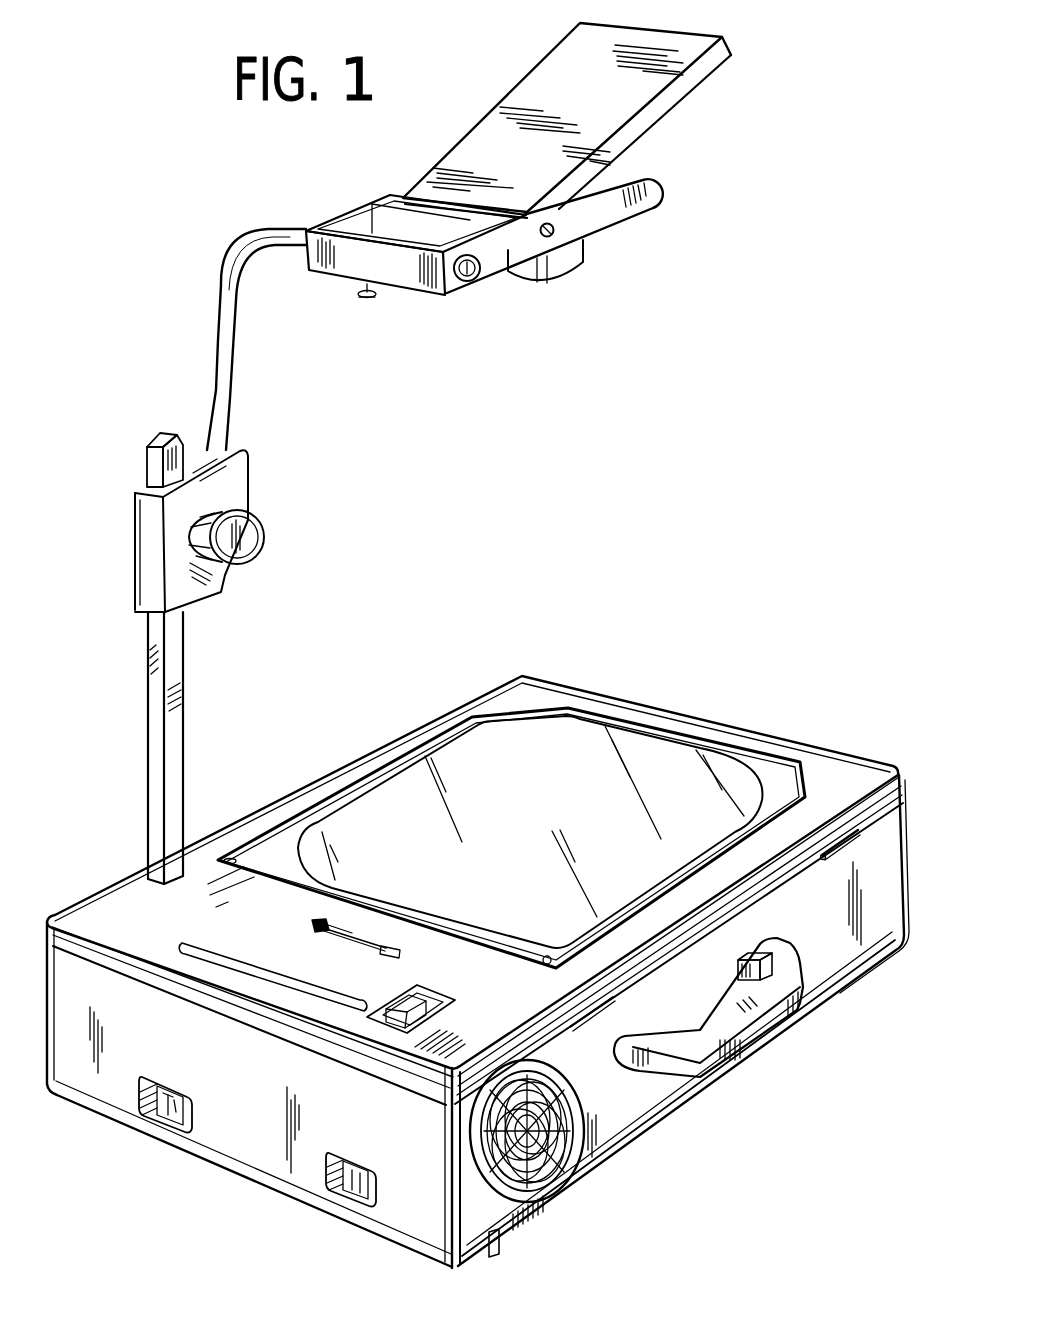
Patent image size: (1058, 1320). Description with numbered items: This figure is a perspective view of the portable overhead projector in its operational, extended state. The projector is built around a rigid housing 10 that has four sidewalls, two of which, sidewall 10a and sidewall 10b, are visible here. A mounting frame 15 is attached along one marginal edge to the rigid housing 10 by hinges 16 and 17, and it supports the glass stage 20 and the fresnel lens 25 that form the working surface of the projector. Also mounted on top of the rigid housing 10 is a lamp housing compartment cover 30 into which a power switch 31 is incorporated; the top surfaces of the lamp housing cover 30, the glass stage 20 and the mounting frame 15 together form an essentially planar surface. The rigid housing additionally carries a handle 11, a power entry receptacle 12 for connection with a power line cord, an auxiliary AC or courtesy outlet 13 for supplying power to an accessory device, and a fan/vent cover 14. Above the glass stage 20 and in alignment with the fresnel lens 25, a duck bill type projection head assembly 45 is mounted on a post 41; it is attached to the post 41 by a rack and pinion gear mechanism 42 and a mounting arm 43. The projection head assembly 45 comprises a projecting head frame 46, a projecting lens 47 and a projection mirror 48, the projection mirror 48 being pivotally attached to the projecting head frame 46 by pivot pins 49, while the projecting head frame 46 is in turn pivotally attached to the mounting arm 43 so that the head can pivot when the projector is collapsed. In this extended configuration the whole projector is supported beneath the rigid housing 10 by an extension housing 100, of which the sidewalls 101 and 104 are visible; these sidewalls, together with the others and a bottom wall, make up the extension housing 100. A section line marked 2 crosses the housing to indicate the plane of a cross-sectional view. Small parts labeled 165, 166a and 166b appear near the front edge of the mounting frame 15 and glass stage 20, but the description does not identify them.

The rigid housing 10 is at (641, 664).
The sidewall 10a is at (825, 968).
The sidewall 10b is at (103, 1093).
The handle 11 is at (758, 1027).
The power entry receptacle 12 is at (183, 1103).
The auxiliary AC outlet 13 is at (360, 1163).
The fan/vent cover 14 is at (573, 1110).
The mounting frame 15 is at (847, 775).
The hinge 16 is at (610, 1000).
The hinge 17 is at (830, 853).
The glass stage 20 is at (412, 757).
The fresnel lens 25 is at (477, 748).
The lamp housing compartment cover 30 is at (110, 900).
The power switch 31 is at (430, 1021).
The post 41 is at (150, 703).
The rack and pinion gear mechanism 42 is at (232, 472).
The mounting arm 43 is at (235, 357).
The projection head assembly 45 is at (656, 228).
The projecting head frame 46 is at (655, 196).
The projecting lens 47 is at (553, 265).
The projection mirror 48 is at (666, 42).
The pivot pins 49 is at (547, 223).
The extension housing 100 is at (556, 1200).
The sidewall 101 is at (481, 1246).
The sidewall 104 is at (637, 1137).
The clip 165 is at (315, 926).
The rod 166a is at (399, 946).
The wire 166b is at (327, 925).
The section line 2- 2 is at (646, 752).